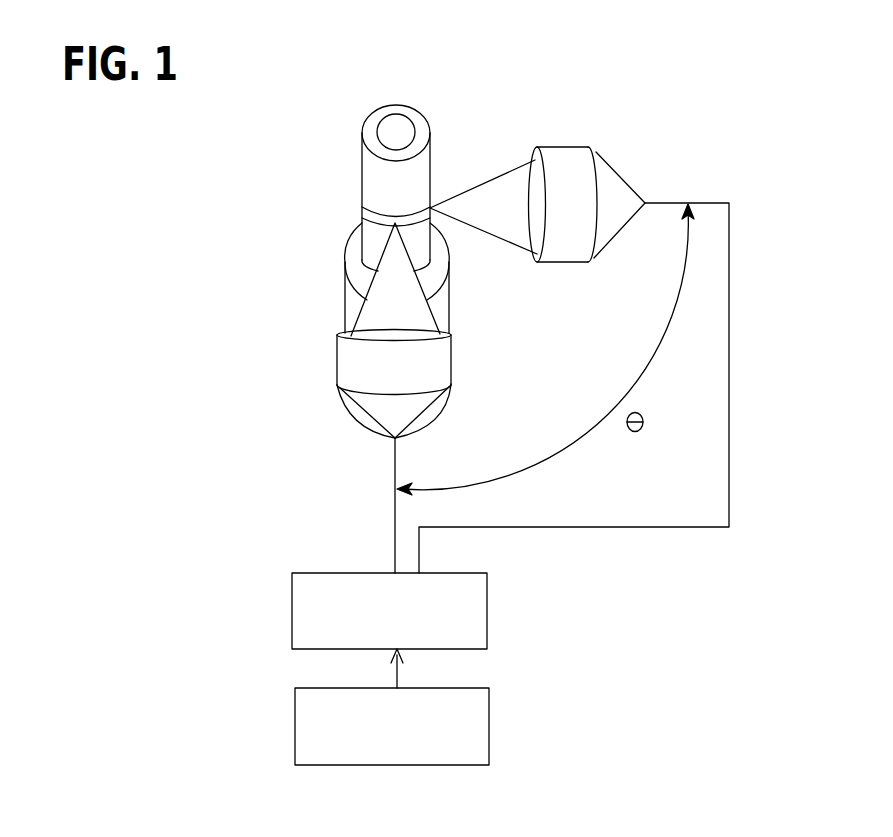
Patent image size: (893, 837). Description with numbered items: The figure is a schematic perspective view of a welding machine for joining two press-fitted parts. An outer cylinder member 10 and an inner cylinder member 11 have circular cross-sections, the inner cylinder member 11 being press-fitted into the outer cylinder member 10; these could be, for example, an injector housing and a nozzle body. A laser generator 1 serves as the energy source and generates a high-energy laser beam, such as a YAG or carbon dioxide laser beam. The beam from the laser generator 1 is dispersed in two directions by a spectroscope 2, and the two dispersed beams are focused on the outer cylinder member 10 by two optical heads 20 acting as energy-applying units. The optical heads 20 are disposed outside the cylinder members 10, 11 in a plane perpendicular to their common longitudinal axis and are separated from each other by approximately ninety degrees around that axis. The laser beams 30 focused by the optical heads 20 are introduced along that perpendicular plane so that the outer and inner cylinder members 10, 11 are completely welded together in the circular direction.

The laser generator 1 is at (295, 735).
The spectroscope 2 is at (292, 612).
The outer cylinder member 10 is at (364, 133).
The inner cylinder member 11 is at (398, 128).
The optical head 20 is at (573, 147).
The laser beam 30 is at (482, 182).